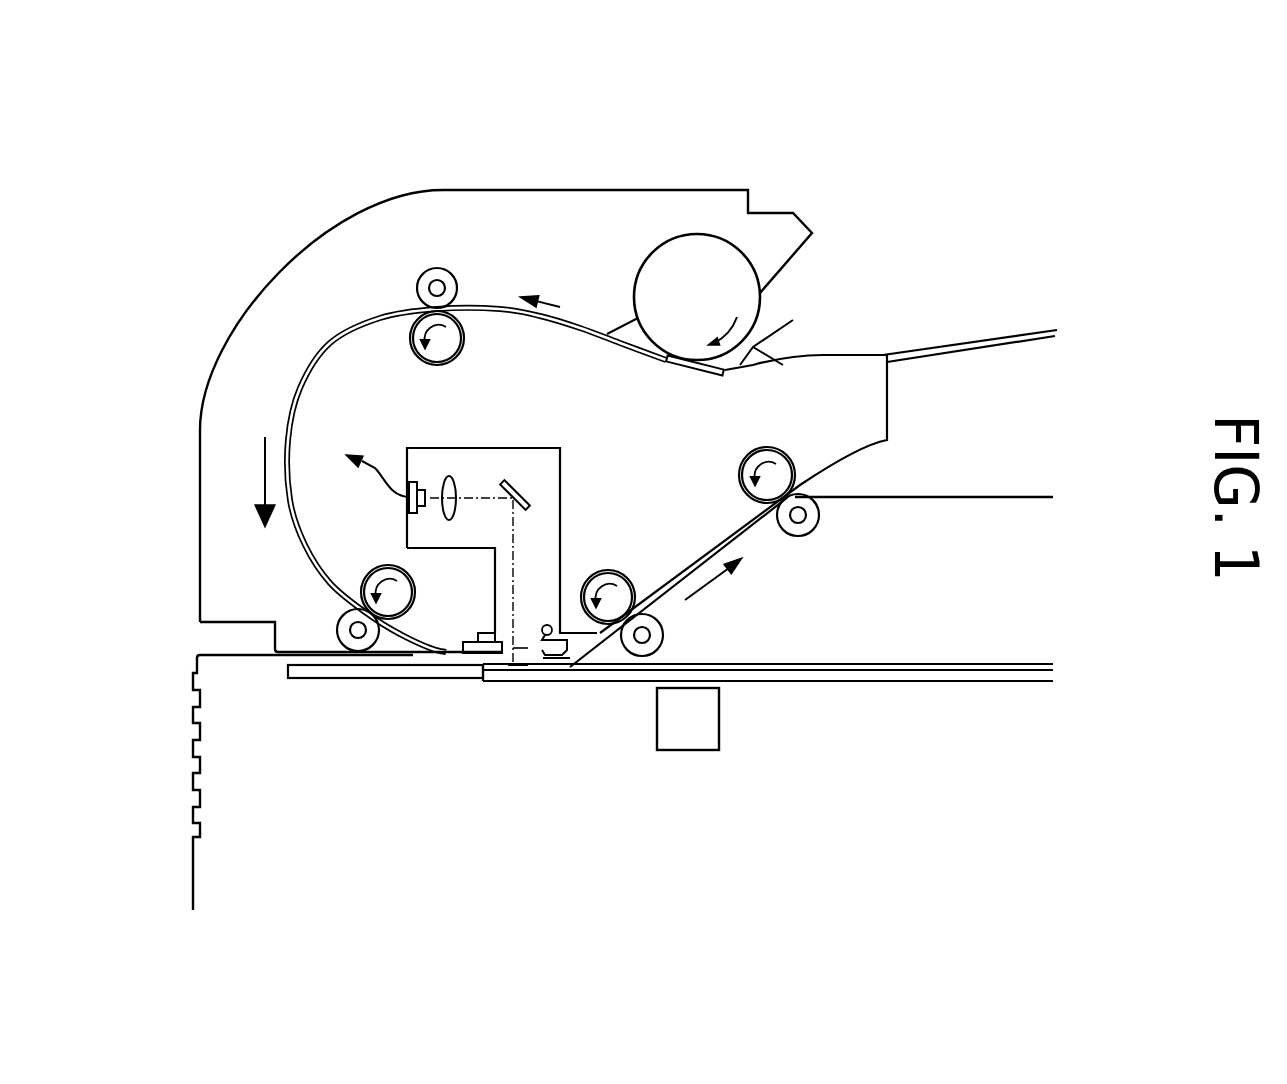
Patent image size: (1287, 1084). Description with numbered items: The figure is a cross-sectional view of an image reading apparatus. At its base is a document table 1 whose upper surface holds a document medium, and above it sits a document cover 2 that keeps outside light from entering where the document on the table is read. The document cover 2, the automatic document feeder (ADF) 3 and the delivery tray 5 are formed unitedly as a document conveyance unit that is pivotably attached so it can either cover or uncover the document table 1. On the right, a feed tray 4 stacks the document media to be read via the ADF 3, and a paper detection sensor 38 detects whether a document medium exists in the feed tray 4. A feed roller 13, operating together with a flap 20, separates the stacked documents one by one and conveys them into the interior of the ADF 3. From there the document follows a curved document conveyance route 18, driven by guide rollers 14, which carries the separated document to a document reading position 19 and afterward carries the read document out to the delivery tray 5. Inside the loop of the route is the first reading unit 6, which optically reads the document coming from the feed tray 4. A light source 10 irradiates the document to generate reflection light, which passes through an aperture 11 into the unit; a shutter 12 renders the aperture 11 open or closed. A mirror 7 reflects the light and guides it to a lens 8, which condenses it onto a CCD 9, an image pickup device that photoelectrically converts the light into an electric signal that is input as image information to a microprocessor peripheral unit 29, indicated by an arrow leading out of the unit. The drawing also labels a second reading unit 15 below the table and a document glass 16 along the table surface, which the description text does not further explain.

The document table 1 is at (195, 845).
The document cover 2 is at (875, 600).
The automatic document feeder (ADF) 3 is at (427, 183).
The feed tray 4 is at (1010, 390).
The delivery tray 5 is at (1007, 465).
The first reading unit 6 is at (480, 448).
The mirror 7 is at (518, 484).
The lens 8 is at (445, 478).
The CCD (image pickup device) 9 is at (410, 497).
The light source 10 is at (553, 635).
The aperture 11 is at (520, 642).
The shutter 12 is at (458, 660).
The feed roller 13 is at (717, 272).
The guide roller 14 is at (447, 270).
The second reading unit 15 is at (693, 738).
The document glass 16 is at (835, 675).
The document conveyance route 18 is at (307, 370).
The document reading position 19 is at (518, 644).
The flap 20 is at (672, 372).
The microprocessor peripheral unit 29 is at (348, 469).
The paper detection sensor 38 is at (770, 347).